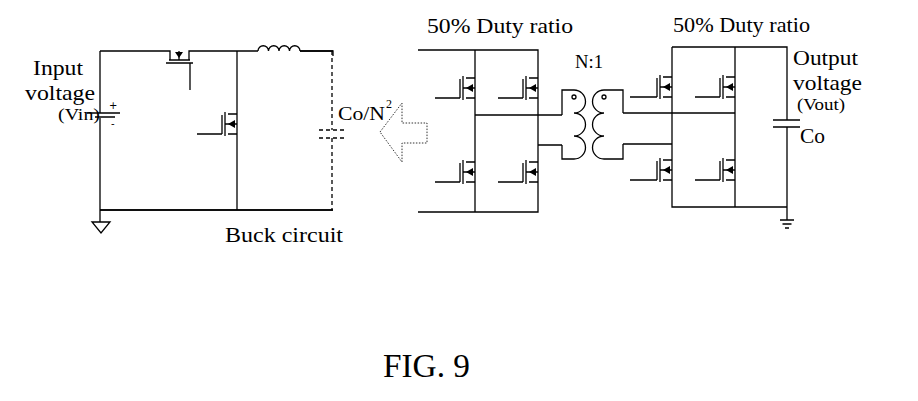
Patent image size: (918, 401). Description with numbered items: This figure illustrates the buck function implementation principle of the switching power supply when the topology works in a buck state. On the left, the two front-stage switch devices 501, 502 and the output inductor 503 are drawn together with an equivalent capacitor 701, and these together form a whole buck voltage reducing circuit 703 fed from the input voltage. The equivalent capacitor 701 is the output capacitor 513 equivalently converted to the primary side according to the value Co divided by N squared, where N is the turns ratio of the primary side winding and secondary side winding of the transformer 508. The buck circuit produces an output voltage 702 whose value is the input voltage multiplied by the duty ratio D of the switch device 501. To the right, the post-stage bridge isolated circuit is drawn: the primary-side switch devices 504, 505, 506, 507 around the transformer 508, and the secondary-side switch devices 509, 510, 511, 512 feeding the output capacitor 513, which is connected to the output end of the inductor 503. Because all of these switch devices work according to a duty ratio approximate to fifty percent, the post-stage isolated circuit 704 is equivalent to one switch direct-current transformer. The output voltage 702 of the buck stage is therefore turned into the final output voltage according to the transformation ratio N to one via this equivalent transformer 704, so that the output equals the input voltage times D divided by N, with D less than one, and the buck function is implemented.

The switch device 501 is at (170, 58).
The switch device 502 is at (217, 140).
The output inductor 503 is at (279, 38).
The switch device 504 is at (455, 80).
The switch device 505 is at (455, 159).
The switch device 506 is at (518, 161).
The switch device 507 is at (514, 80).
The transformer 508 is at (592, 138).
The switch device 509 is at (648, 77).
The switch device 510 is at (651, 181).
The switch device 511 is at (712, 179).
The switch device 512 is at (710, 77).
The output capacitor 513 is at (779, 134).
The equivalent capacitor 701 is at (316, 130).
The output voltage 702 is at (330, 43).
The buck voltage reducing circuit 703 is at (216, 227).
The post-stage isolated circuit 704 is at (605, 179).